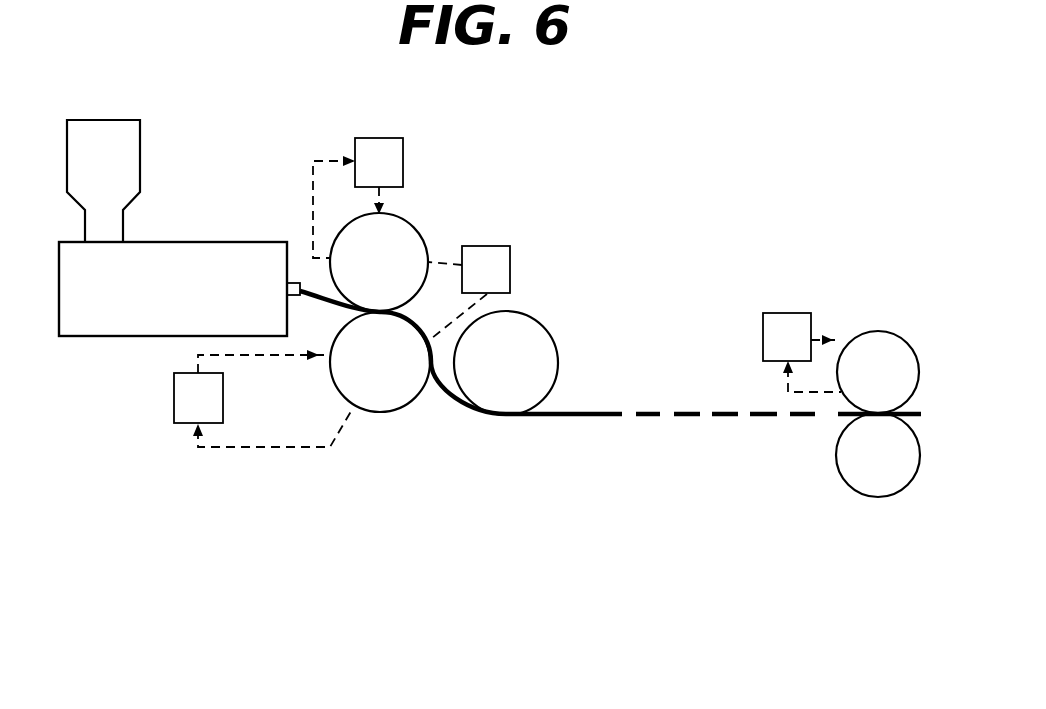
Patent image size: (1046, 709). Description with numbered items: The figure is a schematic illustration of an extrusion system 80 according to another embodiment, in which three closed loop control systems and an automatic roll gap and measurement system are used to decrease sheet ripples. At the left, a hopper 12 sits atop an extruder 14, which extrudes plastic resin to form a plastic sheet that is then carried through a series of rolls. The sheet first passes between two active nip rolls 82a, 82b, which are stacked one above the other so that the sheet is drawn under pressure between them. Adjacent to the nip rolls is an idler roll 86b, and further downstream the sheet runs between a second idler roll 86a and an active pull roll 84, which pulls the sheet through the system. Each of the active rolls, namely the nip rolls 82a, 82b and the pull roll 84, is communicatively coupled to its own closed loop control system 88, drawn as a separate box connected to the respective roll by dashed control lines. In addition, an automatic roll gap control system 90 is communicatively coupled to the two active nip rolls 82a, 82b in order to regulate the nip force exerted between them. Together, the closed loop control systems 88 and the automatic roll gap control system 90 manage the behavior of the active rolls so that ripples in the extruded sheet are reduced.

The hopper 12 is at (125, 171).
The extruder 14 is at (138, 327).
The extrusion system 80 is at (659, 134).
The active nip roll 82a is at (388, 398).
The active nip roll 82b is at (407, 240).
The active pull roll 84 is at (850, 468).
The idler roll 86a is at (878, 338).
The idler roll 86b is at (538, 340).
The closed loop control system 88 is at (396, 178).
The automatic roll gap control system 90 is at (503, 285).